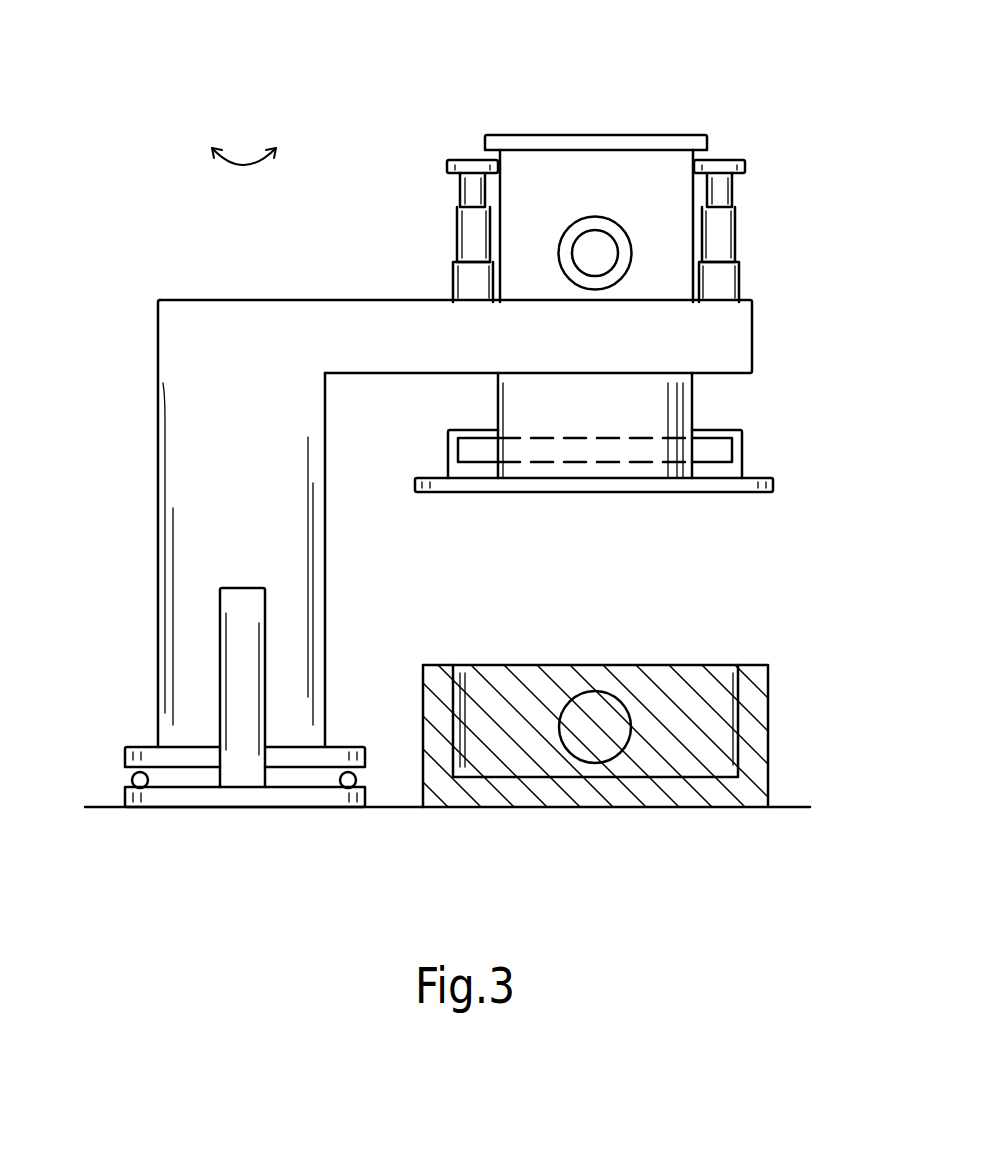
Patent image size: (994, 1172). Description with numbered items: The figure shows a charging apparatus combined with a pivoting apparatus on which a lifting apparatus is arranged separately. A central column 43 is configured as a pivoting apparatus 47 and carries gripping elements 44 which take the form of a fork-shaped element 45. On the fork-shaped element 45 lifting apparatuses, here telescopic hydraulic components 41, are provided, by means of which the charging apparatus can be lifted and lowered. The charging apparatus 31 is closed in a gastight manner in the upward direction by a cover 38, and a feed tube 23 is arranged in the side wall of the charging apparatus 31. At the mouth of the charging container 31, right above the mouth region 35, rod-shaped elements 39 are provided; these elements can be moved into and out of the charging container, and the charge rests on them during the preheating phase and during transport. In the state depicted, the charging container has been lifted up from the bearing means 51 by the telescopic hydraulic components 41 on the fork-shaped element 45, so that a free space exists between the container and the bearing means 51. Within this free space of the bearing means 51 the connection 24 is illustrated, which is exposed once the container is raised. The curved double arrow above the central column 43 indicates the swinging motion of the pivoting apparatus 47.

The feed tube 23 is at (613, 232).
The connection 24 is at (583, 740).
The charging apparatus 31 is at (560, 412).
The mouth region 35 is at (725, 486).
The cover 38 is at (550, 137).
The rod-shaped elements 39 is at (547, 449).
The fastening bolts 41 is at (458, 280).
The central column 43 is at (235, 800).
The gripping elements 44 is at (520, 334).
The fork-shaped element 45 is at (738, 347).
The pivoting apparatus 47 is at (208, 505).
The bearing means 51 is at (725, 793).